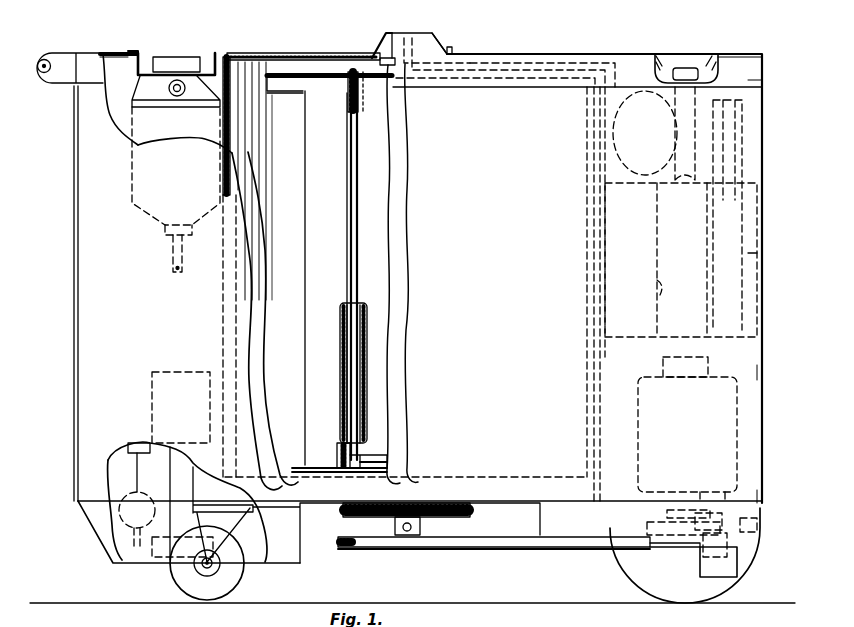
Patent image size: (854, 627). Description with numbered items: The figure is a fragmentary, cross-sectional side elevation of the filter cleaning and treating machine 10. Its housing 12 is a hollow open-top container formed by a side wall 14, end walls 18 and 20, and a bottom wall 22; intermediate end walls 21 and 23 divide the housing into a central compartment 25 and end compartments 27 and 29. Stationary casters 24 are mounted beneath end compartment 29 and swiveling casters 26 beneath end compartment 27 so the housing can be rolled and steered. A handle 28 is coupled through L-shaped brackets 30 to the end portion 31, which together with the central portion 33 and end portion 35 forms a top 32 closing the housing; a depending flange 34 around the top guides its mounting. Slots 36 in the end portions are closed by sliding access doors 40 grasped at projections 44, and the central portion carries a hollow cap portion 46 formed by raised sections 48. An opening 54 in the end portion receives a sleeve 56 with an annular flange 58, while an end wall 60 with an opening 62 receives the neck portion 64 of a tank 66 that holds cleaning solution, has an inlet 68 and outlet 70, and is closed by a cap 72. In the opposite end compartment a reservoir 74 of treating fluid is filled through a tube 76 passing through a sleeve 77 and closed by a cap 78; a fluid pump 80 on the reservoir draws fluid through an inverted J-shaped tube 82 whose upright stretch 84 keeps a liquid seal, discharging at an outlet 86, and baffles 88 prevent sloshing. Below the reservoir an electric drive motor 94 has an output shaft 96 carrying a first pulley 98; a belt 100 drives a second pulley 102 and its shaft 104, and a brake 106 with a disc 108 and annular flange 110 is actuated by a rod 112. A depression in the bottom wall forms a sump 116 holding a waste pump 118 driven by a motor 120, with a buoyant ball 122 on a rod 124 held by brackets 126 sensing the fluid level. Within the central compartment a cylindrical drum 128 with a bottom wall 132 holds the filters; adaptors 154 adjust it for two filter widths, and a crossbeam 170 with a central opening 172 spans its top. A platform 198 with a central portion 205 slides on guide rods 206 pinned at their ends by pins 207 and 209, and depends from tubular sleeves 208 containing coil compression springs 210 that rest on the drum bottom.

The machine 10 is at (772, 161).
The housing 12 is at (763, 374).
The side wall 14 is at (298, 565).
The end wall 18 is at (76, 478).
The end wall 20 is at (762, 492).
The intermediate end wall 21 is at (222, 305).
The bottom wall 22 is at (322, 508).
The intermediate end wall 23 is at (600, 378).
The stationary casters 24 is at (727, 584).
The central compartment 25 is at (406, 489).
The casters 26 is at (232, 578).
The end compartment 27 is at (156, 336).
The handle 28 is at (44, 59).
The end compartment 29 is at (683, 419).
The L-shaped brackets 30 is at (70, 55).
The end portion 31 is at (112, 55).
The top 32 is at (583, 62).
The central portion 33 is at (405, 28).
The flange 34 is at (764, 80).
The end portion 35 is at (735, 56).
The slots 36 is at (306, 54).
The access door 40 is at (326, 53).
The projection 44 is at (375, 50).
The cap portion 46 is at (441, 40).
The raised sections 48 is at (426, 40).
The opening 54 is at (228, 56).
The sleeve 56 is at (150, 62).
The annular flange 58 is at (132, 51).
The end wall 60 is at (146, 76).
The opening 62 is at (232, 76).
The neck portion 64 is at (185, 85).
The tank 66 is at (136, 150).
The inlet 68 is at (184, 256).
The outlet 70 is at (172, 96).
The cap 72 is at (182, 62).
The reservoir 74 is at (760, 255).
The tube 76 is at (703, 197).
The sleeve 77 is at (668, 62).
The cap 78 is at (690, 68).
The fluid pump 80 is at (645, 193).
The inverted J-shaped tube 82 is at (758, 185).
The upright stretch 84 is at (715, 150).
The discharge outlet 86 is at (618, 130).
The baffles 88 is at (705, 255).
The electric drive motor 94 is at (737, 447).
The output shaft 96 is at (722, 521).
The first pulley 98 is at (718, 562).
The belt 100 is at (578, 549).
The second pulley 102 is at (463, 550).
The shaft 104 is at (422, 524).
The brake 106 is at (666, 516).
The disc 108 is at (727, 540).
The annular flange 110 is at (646, 529).
The rod 112 is at (758, 525).
The sump 116 is at (260, 552).
The waste pump 118 is at (158, 560).
The motor 120 is at (166, 376).
The ball 122 is at (122, 516).
The rod 124 is at (139, 466).
The brackets 126 is at (130, 444).
The cylindrical drum 128 is at (585, 447).
The bottom wall 132 is at (294, 446).
The adaptor 154 is at (304, 157).
The crossbeam 170 is at (270, 73).
The central opening 172 is at (300, 93).
The platform 198 is at (370, 447).
The central portion 205 is at (389, 461).
The guide rods 206 is at (350, 290).
The pin 207 is at (353, 479).
The tubular sleeves 208 is at (342, 352).
The pin 209 is at (365, 82).
The coil compression spring 210 is at (347, 375).